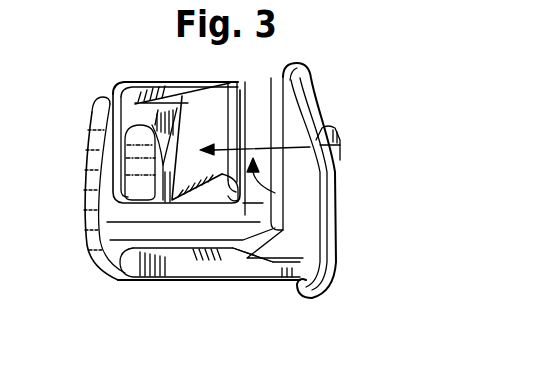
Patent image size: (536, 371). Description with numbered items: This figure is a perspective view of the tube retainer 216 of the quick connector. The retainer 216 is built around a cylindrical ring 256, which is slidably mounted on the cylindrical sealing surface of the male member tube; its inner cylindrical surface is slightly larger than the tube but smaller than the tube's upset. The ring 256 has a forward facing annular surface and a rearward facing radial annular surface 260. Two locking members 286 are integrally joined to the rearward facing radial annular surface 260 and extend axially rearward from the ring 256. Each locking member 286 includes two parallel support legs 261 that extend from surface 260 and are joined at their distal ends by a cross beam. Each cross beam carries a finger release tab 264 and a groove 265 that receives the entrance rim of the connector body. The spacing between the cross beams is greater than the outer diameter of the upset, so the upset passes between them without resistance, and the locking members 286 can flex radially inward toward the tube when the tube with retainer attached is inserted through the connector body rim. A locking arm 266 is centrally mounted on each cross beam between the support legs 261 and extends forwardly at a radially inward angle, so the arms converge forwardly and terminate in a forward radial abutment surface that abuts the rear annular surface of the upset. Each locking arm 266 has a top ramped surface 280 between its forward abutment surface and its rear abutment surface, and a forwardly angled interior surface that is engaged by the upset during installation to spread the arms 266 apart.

The tube retainer 216 is at (336, 268).
The cylindrical ring 256 is at (118, 273).
The rearward facing radial annular surface 260 is at (128, 120).
The support legs 261 is at (175, 235).
The finger release tab 264 is at (292, 91).
The groove 265 is at (275, 193).
The locking arm 266 is at (310, 147).
The top ramped surface 280 is at (201, 112).
The locking members 286 is at (312, 66).